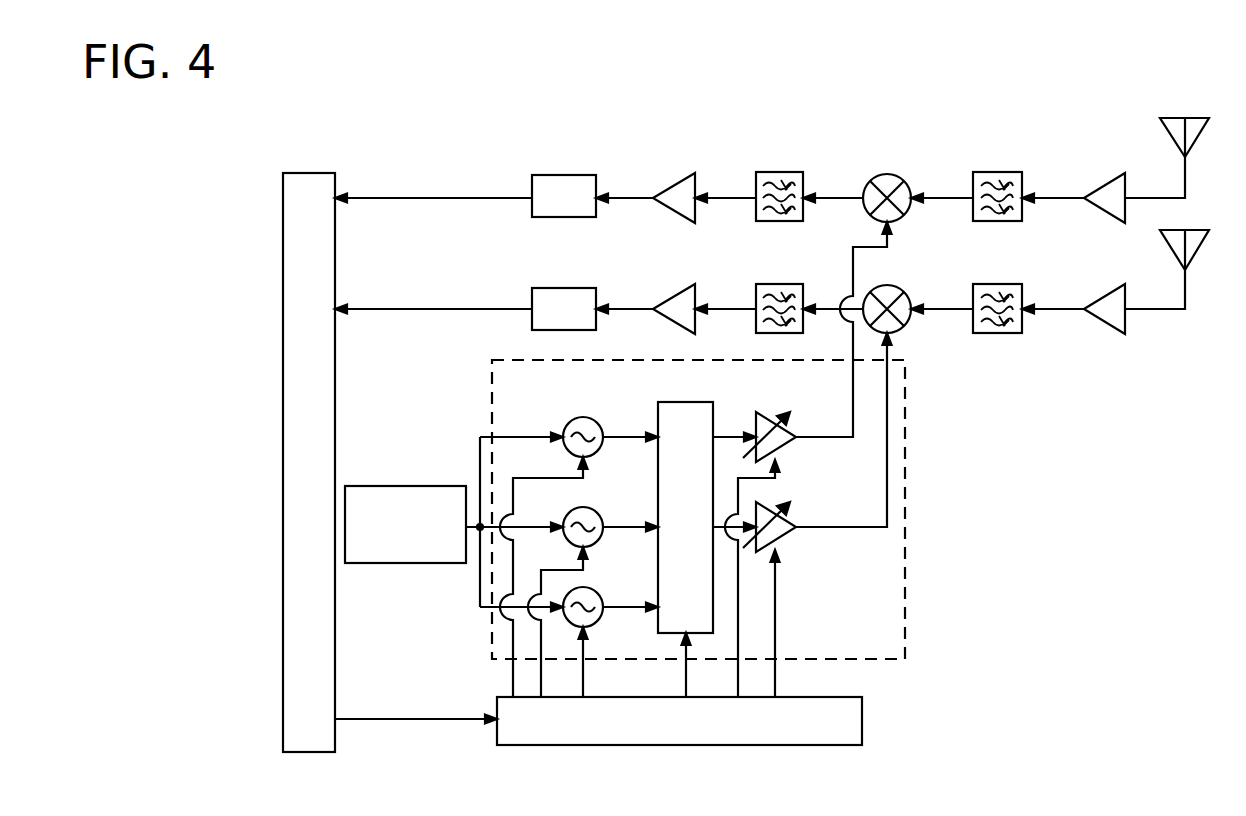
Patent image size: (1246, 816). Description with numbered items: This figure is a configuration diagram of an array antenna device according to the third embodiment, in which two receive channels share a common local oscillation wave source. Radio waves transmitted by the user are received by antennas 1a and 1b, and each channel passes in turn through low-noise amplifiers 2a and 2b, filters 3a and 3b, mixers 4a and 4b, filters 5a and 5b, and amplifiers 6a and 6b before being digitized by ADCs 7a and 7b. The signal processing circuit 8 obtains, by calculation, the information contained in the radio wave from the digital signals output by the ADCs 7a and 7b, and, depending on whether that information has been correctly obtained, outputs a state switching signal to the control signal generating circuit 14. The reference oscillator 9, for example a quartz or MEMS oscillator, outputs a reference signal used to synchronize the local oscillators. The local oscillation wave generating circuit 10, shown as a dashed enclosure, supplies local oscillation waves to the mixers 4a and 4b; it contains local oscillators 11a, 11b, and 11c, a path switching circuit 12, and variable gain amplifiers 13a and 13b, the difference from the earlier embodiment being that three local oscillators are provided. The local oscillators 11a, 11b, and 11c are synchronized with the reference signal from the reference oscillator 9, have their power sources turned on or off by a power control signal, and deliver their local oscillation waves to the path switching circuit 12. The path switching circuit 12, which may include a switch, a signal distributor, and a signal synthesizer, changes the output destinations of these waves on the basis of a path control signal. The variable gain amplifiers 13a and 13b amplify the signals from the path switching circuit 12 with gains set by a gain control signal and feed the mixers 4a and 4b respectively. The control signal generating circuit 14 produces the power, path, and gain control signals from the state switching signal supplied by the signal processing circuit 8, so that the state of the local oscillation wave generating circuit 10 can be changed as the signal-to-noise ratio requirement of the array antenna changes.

The antenna 1a is at (1188, 110).
The antenna 1b is at (1188, 225).
The low-noise amplifier 2a is at (1104, 170).
The low-noise amplifier 2b is at (1104, 283).
The filter 3a is at (996, 168).
The filter 3b is at (996, 281).
The mixer 4a is at (892, 165).
The mixer 4b is at (892, 276).
The filter 5a is at (779, 165).
The filter 5b is at (779, 276).
The amplifier 6a is at (677, 165).
The amplifier 6b is at (677, 276).
The ADC 7a is at (564, 165).
The ADC 7b is at (564, 276).
The signal processing circuit 8 is at (312, 165).
The reference oscillator 9 is at (404, 484).
The local oscillation wave generating circuit 10 is at (905, 441).
The local oscillator 11a is at (598, 423).
The local oscillator 11b is at (598, 513).
The local oscillator 11c is at (598, 593).
The path switching circuit 12 is at (690, 401).
The variable gain amplifier 13a is at (797, 421).
The variable gain amplifier 13b is at (797, 513).
The control signal generating circuit 14 is at (868, 721).